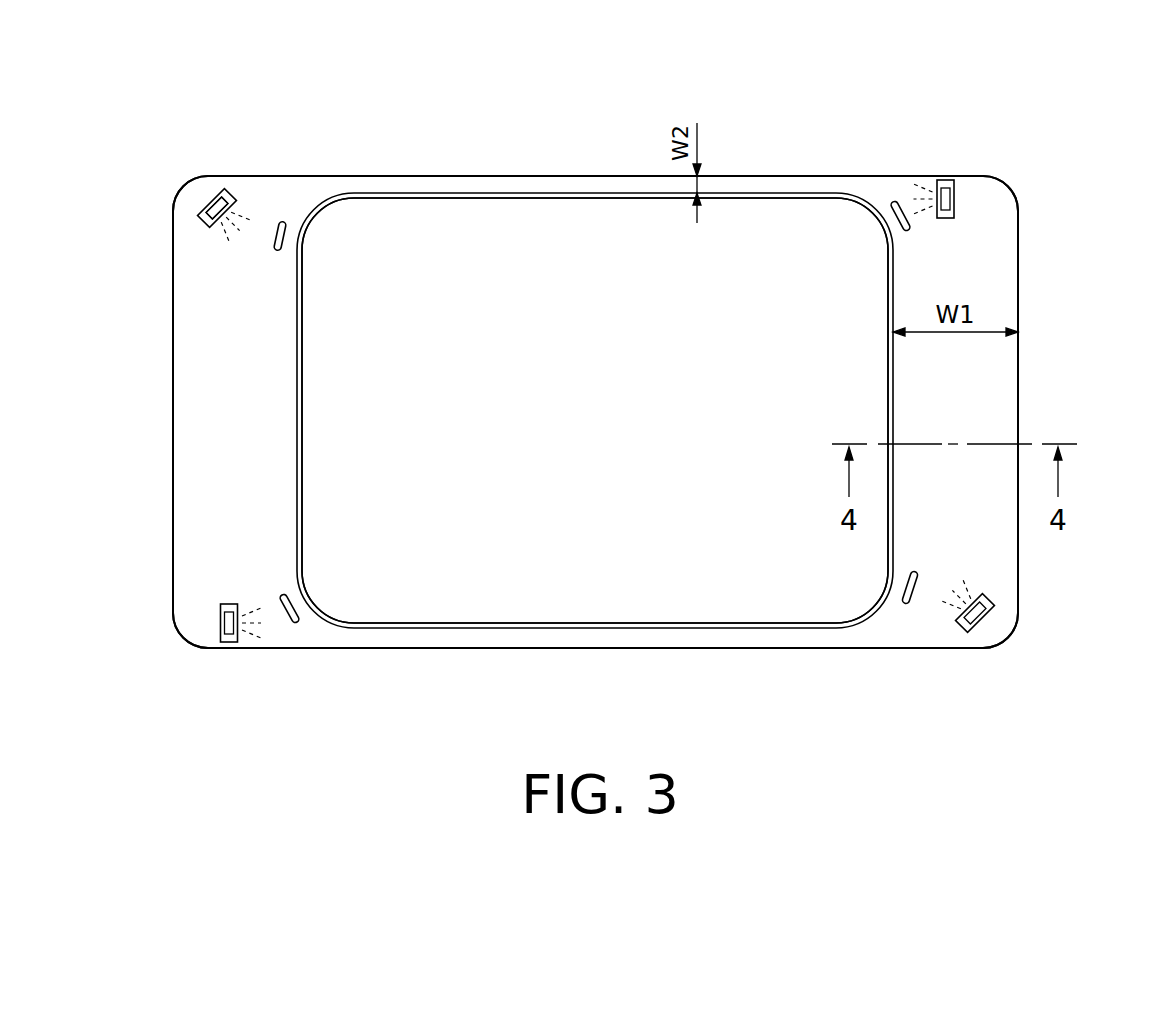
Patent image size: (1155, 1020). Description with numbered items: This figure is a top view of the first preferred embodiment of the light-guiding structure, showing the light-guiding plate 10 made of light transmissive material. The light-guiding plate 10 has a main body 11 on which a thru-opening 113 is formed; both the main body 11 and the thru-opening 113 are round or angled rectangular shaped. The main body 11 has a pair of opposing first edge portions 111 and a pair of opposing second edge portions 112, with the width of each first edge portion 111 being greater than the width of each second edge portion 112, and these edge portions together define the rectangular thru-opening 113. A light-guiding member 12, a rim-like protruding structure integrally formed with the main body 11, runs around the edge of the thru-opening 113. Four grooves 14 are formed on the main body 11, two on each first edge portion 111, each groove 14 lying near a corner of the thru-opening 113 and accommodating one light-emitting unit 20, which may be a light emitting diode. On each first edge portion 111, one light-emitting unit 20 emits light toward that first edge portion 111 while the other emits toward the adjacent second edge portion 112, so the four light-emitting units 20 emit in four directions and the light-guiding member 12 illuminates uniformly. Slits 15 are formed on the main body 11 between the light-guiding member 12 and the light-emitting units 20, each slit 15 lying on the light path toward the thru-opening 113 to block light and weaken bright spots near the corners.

The light-guiding plate 10 is at (374, 148).
The main body 11 is at (195, 390).
The first edge portion 111 is at (960, 387).
The second edge portion 112 is at (478, 188).
The thru-opening 113 is at (568, 412).
The light-guiding member 12 is at (567, 630).
The groove 14 is at (235, 200).
The slit 15 is at (278, 215).
The light-emitting unit 20 is at (207, 203).